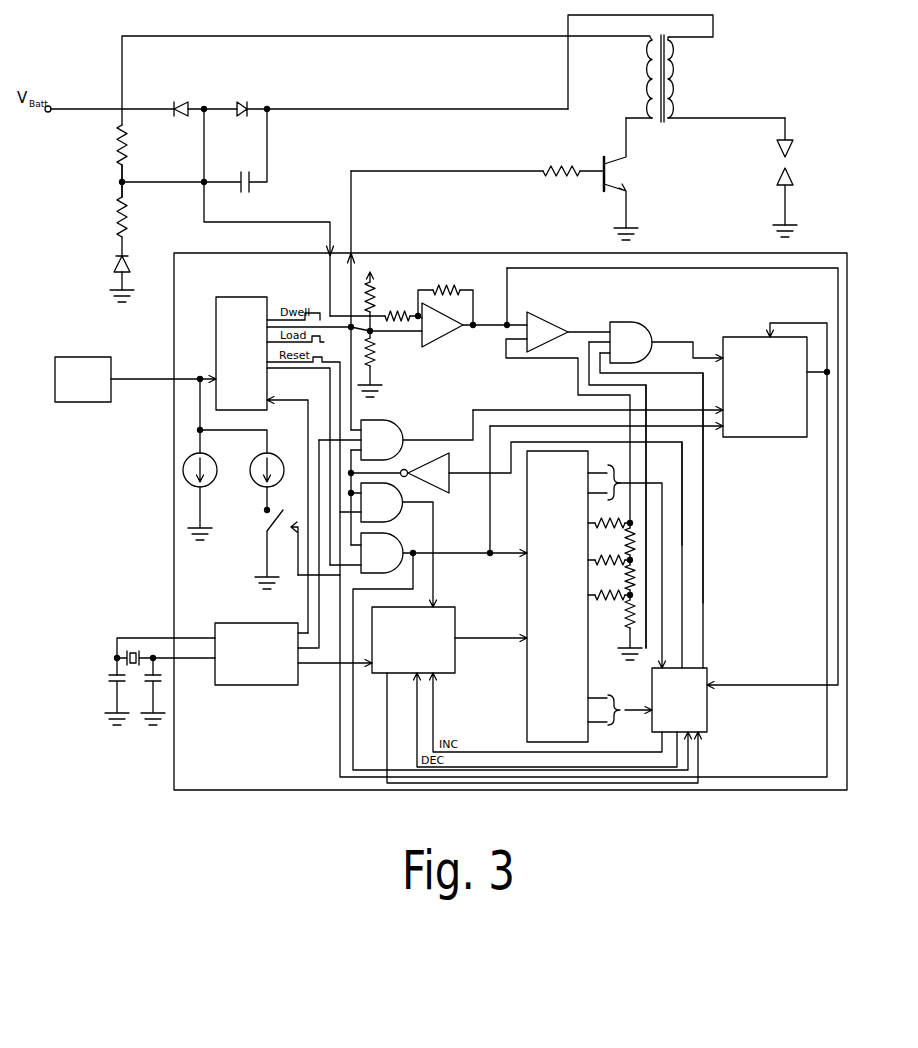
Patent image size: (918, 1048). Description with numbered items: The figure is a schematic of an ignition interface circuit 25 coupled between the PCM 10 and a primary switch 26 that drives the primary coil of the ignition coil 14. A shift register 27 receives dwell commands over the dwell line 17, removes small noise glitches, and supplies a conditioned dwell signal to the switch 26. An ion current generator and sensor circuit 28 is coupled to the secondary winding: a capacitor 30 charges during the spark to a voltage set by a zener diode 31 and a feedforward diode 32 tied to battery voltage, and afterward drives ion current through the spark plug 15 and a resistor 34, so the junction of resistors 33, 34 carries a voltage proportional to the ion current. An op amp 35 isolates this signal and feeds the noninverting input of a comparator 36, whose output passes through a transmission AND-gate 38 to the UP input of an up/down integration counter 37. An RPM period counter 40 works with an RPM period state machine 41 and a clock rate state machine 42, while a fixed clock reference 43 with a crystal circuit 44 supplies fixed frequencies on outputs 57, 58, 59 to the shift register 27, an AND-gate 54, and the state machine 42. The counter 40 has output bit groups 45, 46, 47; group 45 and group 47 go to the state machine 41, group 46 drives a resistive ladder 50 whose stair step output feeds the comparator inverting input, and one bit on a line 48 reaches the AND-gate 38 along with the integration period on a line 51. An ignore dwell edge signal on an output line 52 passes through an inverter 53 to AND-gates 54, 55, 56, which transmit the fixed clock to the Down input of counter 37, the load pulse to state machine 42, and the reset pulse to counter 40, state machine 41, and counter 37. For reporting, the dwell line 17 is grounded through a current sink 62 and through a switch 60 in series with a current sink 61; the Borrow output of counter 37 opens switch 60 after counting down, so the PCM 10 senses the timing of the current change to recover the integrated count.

The PCM 10 is at (73, 357).
The ignition coil 14 is at (690, 74).
The spark plug 15 is at (808, 161).
The dwell line 17 is at (143, 382).
The ignition interface circuit 25 is at (218, 791).
The primary switch 26 is at (583, 180).
The shift register 27 is at (236, 297).
The ion current generator and sensor circuit 28 is at (88, 186).
The capacitor 30 is at (252, 186).
The zener diode 31 is at (241, 102).
The feedforward diode 32 is at (178, 102).
The resistor 33 is at (117, 142).
The resistor 34 is at (117, 219).
The op amp 35 is at (447, 338).
The comparator 36 is at (548, 320).
The up/down integration counter 37 is at (738, 337).
The transmission AND-gate 38 is at (645, 322).
The RPM period counter 40 is at (527, 719).
The RPM period state machine 41 is at (708, 703).
The clock rate state machine 42 is at (456, 613).
The fixed clock reference 43 is at (248, 686).
The crystal circuit 44 is at (117, 629).
The first group of bits 45 is at (613, 724).
The second group of bits 46 is at (582, 582).
The third group of bits 47 is at (615, 472).
The line 48 is at (646, 648).
The resistive ladder 50 is at (605, 610).
The line 51 is at (704, 603).
The output line 52 is at (683, 545).
The inverter 53 is at (436, 455).
The AND-gate 54 is at (392, 422).
The AND-gate 55 is at (403, 496).
The AND-gate 56 is at (403, 545).
The output 57 is at (307, 597).
The output 58 is at (317, 610).
The output 59 is at (318, 666).
The switch 60 is at (268, 527).
The current sink 61 is at (283, 458).
The current sink 62 is at (183, 470).